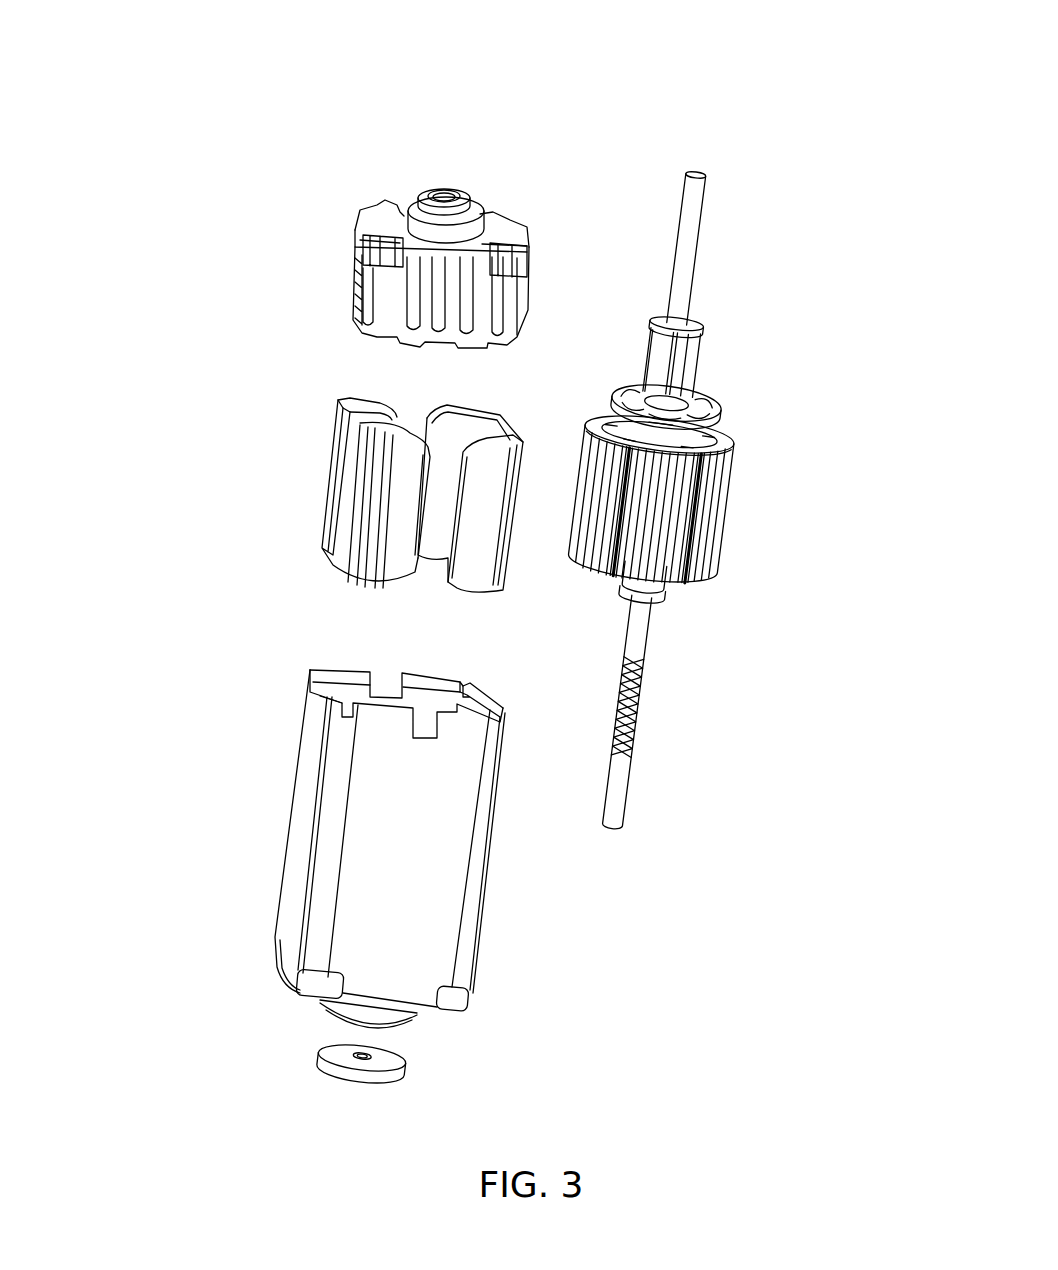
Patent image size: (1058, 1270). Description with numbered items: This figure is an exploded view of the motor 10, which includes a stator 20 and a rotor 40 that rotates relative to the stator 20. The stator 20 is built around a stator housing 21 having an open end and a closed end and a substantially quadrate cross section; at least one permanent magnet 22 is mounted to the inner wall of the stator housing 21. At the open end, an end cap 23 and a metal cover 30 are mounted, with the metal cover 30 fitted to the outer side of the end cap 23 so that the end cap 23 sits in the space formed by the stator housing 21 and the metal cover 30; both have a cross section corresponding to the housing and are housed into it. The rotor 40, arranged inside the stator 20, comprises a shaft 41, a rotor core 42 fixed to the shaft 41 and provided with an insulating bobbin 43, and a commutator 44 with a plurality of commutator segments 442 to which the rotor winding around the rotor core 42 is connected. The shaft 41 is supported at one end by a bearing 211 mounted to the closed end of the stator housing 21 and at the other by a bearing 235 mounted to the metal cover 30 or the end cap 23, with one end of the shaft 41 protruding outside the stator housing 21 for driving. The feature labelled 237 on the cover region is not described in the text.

The motor 10 is at (490, 47).
The stator 20 is at (259, 645).
The stator housing 21 is at (298, 886).
The bearing 211 is at (338, 1067).
The permanent magnet 22 is at (393, 512).
The end cap 23 is at (385, 298).
The metal cover 30 is at (380, 222).
The bearing 235 is at (460, 210).
The bearing boss 237 is at (483, 220).
The rotor 40 is at (711, 645).
The shaft 41 is at (685, 221).
The rotor core 42 is at (687, 508).
The insulating bobbin 43 is at (700, 445).
The commutator 44 is at (699, 385).
The commutator segments 442 is at (698, 343).